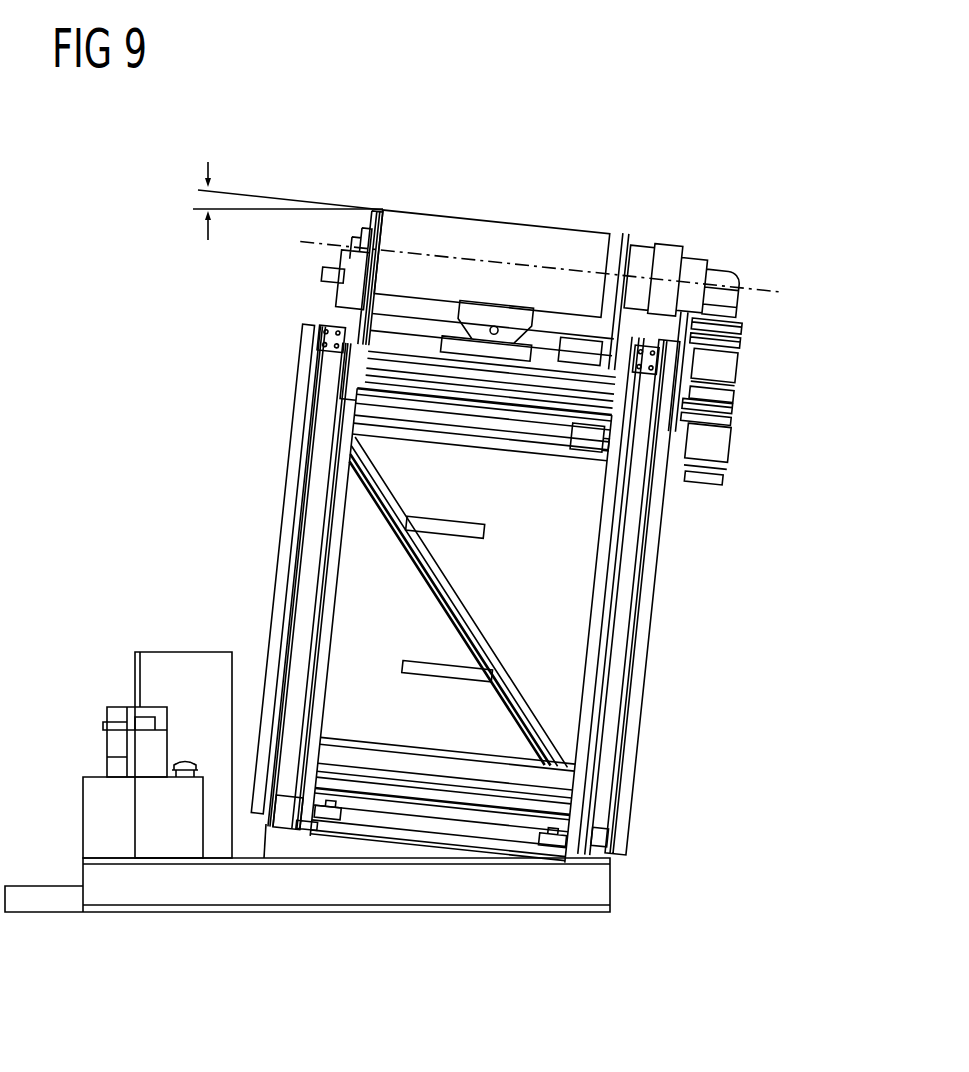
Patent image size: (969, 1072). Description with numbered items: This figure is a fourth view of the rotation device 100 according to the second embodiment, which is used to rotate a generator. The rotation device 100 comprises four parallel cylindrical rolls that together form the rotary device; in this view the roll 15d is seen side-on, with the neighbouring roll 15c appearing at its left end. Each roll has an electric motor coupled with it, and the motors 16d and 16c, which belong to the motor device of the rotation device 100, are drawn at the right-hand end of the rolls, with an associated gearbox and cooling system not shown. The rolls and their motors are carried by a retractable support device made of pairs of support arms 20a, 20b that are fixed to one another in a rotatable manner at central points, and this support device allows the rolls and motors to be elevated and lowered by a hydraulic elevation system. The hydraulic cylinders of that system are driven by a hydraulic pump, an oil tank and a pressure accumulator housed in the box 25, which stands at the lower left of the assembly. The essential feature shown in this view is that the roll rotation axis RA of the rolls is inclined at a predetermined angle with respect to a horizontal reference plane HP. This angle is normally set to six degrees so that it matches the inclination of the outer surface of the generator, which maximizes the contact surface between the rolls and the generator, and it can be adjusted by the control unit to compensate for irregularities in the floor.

The rotation device 100 is at (653, 126).
The cylindrical roll 15d is at (495, 232).
The cylindrical roll 15c is at (388, 302).
The electric motor 16d is at (725, 367).
The electric motor 16c is at (717, 451).
The support arm 20a is at (290, 544).
The support arm 20b is at (317, 497).
The box 25 is at (176, 663).
The horizontal reference plane HP is at (252, 213).
The roll rotation axis RA is at (770, 290).